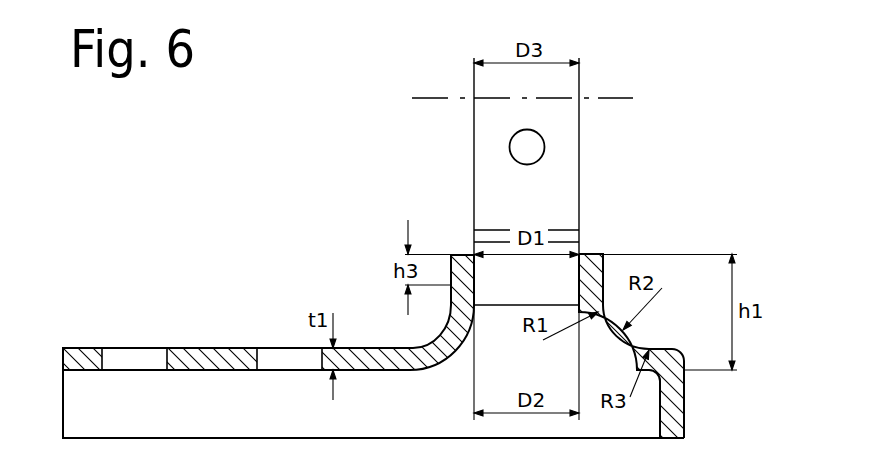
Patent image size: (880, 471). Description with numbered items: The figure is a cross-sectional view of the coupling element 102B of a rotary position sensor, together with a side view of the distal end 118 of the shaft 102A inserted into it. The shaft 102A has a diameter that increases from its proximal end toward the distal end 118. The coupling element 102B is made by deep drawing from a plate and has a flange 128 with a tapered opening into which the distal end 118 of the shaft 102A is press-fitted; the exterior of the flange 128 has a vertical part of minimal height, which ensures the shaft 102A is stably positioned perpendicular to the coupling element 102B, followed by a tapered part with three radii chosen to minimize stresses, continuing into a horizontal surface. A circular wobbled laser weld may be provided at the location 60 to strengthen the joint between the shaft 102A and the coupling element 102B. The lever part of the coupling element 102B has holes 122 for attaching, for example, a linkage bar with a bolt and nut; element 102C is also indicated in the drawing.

The laser weld location 60 is at (580, 253).
The shaft 102A is at (580, 162).
The coupling element 102B is at (213, 358).
The weld portion 102C is at (512, 150).
The distal end 118 is at (497, 278).
The holes 122 is at (128, 356).
The flange 128 is at (584, 271).